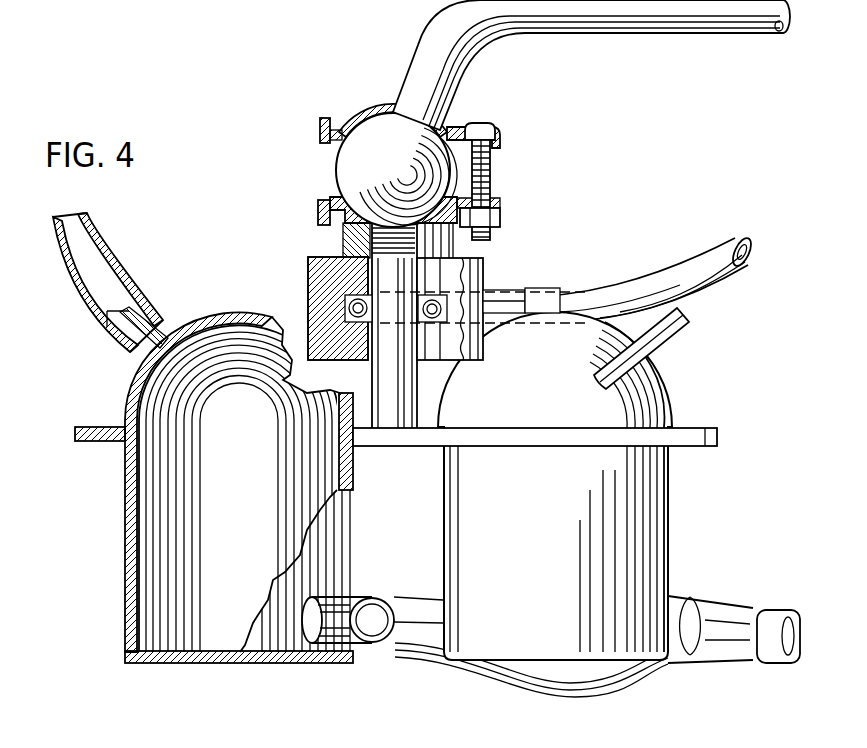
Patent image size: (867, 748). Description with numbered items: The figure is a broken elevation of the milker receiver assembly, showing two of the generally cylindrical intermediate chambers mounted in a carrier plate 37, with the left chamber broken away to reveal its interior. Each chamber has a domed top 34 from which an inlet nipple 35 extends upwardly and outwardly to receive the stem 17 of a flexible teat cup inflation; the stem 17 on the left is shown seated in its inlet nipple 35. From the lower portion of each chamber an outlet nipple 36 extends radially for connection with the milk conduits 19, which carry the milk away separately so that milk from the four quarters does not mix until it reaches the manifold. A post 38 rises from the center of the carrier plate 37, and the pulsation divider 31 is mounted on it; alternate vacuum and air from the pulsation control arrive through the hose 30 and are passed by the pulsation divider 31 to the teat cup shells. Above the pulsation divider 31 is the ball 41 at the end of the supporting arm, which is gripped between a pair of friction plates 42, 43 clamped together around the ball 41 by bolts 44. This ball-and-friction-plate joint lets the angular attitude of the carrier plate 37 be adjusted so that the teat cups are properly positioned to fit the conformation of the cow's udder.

The stem portion 17 is at (80, 243).
The milk conduits 19 is at (403, 610).
The hose 30 is at (707, 262).
The pulsation divider 31 is at (480, 280).
The domed top 34 is at (240, 278).
The inlet nipple 35 is at (147, 330).
The outlet nipple 36 is at (317, 613).
The carrier plate 37 is at (78, 441).
The post 38 is at (383, 368).
The ball 41 is at (377, 137).
The friction plate 42 is at (318, 212).
The friction plate 43 is at (320, 123).
The bolts 44 is at (493, 167).